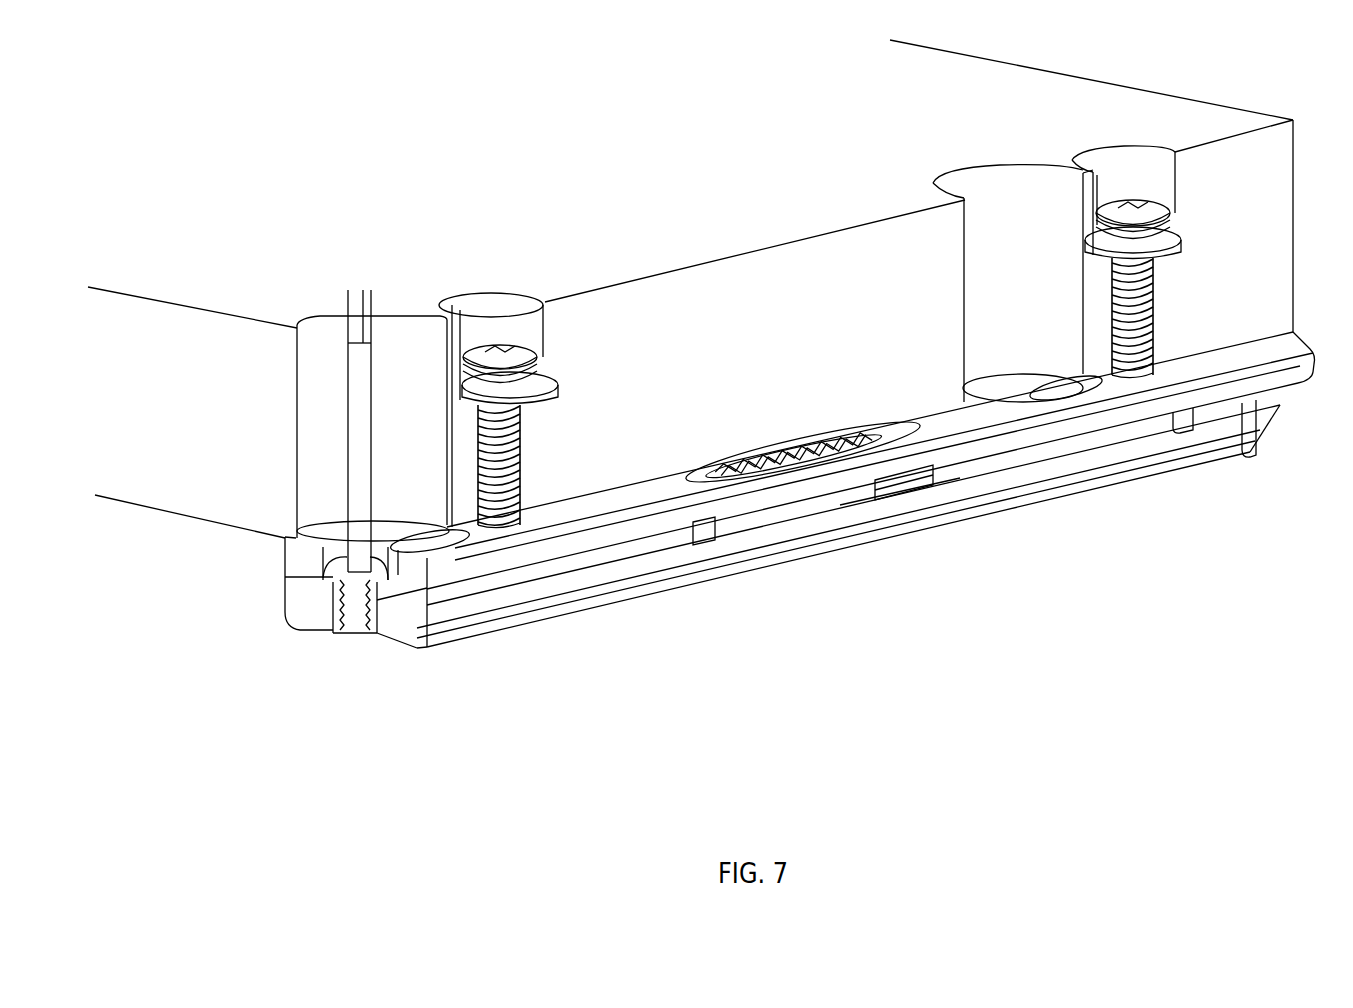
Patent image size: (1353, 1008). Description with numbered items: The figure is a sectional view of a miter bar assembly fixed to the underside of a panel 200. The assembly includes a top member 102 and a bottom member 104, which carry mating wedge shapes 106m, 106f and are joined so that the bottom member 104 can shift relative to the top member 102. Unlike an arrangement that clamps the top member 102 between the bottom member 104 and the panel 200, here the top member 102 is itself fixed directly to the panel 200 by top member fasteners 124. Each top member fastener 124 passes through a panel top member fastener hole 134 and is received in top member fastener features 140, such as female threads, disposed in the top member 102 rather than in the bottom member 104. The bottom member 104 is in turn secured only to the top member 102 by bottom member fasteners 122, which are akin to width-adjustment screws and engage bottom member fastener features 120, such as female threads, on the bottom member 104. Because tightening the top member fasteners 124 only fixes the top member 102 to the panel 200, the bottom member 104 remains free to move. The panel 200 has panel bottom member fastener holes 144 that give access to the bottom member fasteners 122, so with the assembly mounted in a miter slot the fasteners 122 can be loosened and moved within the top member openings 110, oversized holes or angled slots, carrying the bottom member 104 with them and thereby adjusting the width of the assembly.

The panel 200 is at (774, 126).
The top member 102 is at (650, 540).
The bottom member 104 is at (660, 583).
The wedge shape 106m is at (852, 495).
The wedge shape 106f is at (905, 473).
The top member openings 110 is at (442, 540).
The bottom member fastener features 120 is at (332, 615).
The bottom member fasteners 122 is at (348, 617).
The top member fasteners 124 is at (520, 432).
The panel top member fastener hole 134 is at (467, 300).
The top member fastener features 140 is at (520, 520).
The panel bottom member fastener holes 144 is at (308, 325).